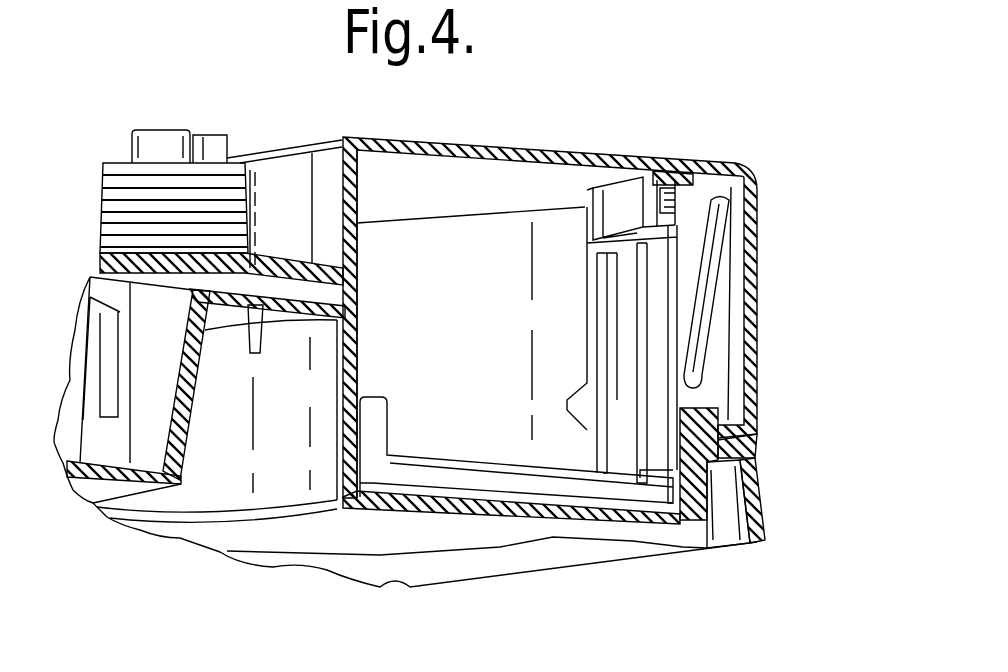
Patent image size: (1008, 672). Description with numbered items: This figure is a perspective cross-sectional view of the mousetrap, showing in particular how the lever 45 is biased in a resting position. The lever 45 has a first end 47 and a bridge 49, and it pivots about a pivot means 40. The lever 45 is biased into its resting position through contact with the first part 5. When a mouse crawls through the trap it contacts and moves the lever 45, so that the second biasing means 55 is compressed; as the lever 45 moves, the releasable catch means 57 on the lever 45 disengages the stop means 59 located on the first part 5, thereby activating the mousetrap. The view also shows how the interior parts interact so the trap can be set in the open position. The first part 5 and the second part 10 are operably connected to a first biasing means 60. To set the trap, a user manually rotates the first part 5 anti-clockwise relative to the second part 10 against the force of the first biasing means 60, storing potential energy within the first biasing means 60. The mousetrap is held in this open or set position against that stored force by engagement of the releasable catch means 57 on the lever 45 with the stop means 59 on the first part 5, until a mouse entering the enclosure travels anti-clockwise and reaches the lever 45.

The first part 5 is at (762, 363).
The second part 10 is at (770, 484).
The pivot means 40 is at (583, 430).
The lever 45 is at (477, 452).
The first end 47 is at (362, 478).
The bridge 49 is at (510, 480).
The second biasing means 55 is at (708, 277).
The releasable catch means 57 is at (672, 200).
The stop means 59 is at (618, 210).
The first biasing means 60 is at (253, 172).